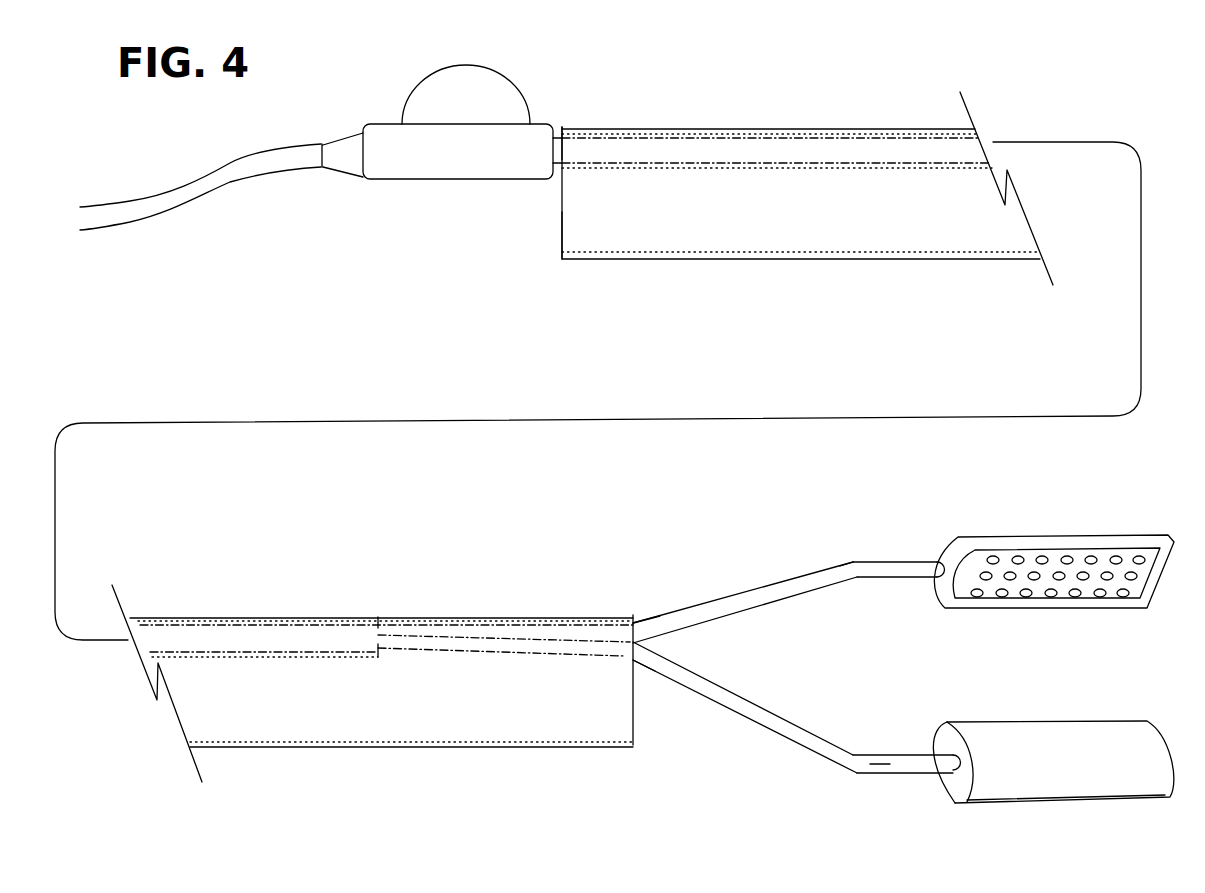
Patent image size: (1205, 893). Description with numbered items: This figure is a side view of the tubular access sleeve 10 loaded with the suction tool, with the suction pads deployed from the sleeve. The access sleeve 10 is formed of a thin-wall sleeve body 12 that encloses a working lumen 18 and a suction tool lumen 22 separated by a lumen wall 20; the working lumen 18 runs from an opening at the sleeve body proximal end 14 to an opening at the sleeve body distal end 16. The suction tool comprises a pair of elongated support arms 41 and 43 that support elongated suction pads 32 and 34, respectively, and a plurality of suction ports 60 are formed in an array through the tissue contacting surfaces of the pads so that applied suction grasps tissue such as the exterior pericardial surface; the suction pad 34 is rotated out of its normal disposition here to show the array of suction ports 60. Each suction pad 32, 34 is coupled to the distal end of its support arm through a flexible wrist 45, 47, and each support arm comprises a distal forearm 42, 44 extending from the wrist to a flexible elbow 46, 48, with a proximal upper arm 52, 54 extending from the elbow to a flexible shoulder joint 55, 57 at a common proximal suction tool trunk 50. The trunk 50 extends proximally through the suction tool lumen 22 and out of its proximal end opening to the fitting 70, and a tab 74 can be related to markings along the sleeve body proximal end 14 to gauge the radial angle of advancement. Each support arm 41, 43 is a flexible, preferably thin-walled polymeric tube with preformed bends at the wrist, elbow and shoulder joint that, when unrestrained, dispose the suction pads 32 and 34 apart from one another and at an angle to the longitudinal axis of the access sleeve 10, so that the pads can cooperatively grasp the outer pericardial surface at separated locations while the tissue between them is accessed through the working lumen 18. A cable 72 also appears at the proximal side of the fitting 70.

The tubular access sleeve 10 is at (599, 320).
The sleeve body 12 is at (598, 440).
The sleeve body proximal end 14 is at (562, 127).
The sleeve body distal end 16 is at (632, 615).
The working lumen 18 is at (562, 212).
The lumen wall 20 is at (910, 167).
The suction tool lumen 22 is at (977, 134).
The suction pad 32 is at (1117, 755).
The suction pad 34 is at (1064, 576).
The support arm 41 is at (780, 761).
The distal forearm 42 is at (890, 755).
The support arm 43 is at (776, 558).
The distal forearm 44 is at (905, 560).
The flexible wrist 45 is at (940, 750).
The flexible elbow 46 is at (858, 770).
The flexible wrist 47 is at (930, 565).
The flexible elbow 48 is at (855, 570).
The proximal suction tool trunk 50 is at (192, 633).
The proximal upper arm 52 is at (788, 740).
The proximal upper arm 54 is at (768, 597).
The flexible shoulder joint 55 is at (640, 670).
The flexible shoulder joint 57 is at (643, 615).
The suction ports 60 is at (1063, 575).
The fitting 70 is at (403, 165).
The cable 72 is at (168, 207).
The tab 74 is at (435, 100).